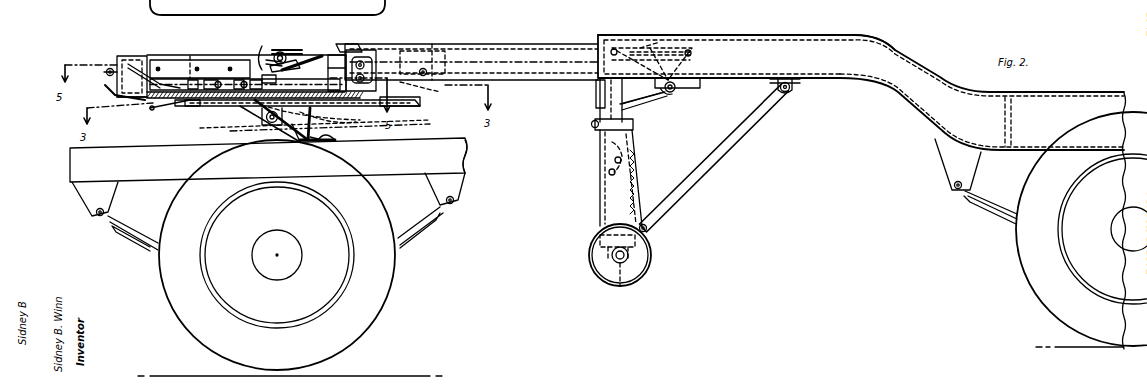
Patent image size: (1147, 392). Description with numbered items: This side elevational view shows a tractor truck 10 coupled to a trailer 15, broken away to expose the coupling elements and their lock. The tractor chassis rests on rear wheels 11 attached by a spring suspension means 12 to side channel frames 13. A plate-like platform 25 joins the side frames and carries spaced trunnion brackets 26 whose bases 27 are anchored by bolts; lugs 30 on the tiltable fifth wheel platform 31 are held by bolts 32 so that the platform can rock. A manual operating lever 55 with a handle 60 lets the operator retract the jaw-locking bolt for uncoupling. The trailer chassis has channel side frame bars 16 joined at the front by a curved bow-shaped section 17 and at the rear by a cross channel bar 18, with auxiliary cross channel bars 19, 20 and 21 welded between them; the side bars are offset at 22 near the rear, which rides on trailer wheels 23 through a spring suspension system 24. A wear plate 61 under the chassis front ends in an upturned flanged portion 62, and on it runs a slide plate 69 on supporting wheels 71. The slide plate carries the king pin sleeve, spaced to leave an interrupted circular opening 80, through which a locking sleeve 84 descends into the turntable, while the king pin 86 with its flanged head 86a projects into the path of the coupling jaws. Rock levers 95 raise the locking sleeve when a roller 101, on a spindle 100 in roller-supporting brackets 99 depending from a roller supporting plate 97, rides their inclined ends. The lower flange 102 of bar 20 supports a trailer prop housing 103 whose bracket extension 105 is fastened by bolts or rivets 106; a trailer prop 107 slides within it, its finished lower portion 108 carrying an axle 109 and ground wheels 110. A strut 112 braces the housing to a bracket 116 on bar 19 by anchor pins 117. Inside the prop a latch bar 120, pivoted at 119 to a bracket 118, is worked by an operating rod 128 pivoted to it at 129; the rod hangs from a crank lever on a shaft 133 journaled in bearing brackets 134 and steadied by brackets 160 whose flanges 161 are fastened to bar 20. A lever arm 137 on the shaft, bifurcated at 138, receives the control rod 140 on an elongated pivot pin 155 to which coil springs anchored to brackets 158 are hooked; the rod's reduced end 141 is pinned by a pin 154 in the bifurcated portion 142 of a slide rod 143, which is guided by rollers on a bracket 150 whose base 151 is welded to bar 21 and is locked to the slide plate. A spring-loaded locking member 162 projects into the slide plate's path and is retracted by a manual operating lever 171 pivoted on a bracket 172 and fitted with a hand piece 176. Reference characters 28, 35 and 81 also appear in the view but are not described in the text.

The tractor truck 10 is at (468, 163).
The rear wheels 11 is at (385, 291).
The spring suspension means 12 is at (419, 232).
The side channel frames 13 is at (428, 142).
The trailer 15 is at (876, 32).
The side frame bars 16 is at (734, 34).
The curved bow-shaped section 17 is at (117, 78).
The cross channel bar 18 is at (1012, 125).
The auxiliary cross channel bar 19 is at (798, 48).
The auxiliary cross channel bar 20 is at (600, 98).
The auxiliary cross channel bar 21 is at (360, 52).
The offset 22 is at (933, 72).
The trailer wheels 23 is at (1045, 280).
The spring suspension system 24 is at (992, 220).
The plate-like platform 25 is at (337, 135).
The trunnion brackets 26 is at (252, 128).
The bracket base 27 is at (247, 142).
The pivot 28 is at (318, 133).
The lugs 30 is at (262, 114).
The tiltable fifth wheel platform 31 is at (195, 107).
The bolts 32 is at (300, 144).
The plate 35 is at (410, 104).
The manual operating lever 55 is at (180, 108).
The handle 60 is at (152, 110).
The wear plate 61 is at (133, 104).
The upturned flanged portion 62 is at (108, 93).
The slide plate 69 is at (250, 48).
The supporting wheels 71 is at (232, 60).
The interrupted circular opening 80 is at (272, 70).
The plate 81 is at (177, 60).
The locking sleeve 84 is at (216, 106).
The king pin 86 is at (320, 114).
The flanged head 86a is at (336, 117).
The rock levers 95 is at (335, 55).
The roller supporting plate 97 is at (290, 52).
The roller-supporting brackets 99 is at (268, 56).
The spindle 100 is at (278, 50).
The roller 101 is at (312, 56).
The lower flange 102 is at (630, 116).
The trailer prop housing 103 is at (600, 194).
The bracket extension 105 is at (595, 125).
The bolts or rivets 106 is at (591, 120).
The trailer prop 107 is at (600, 244).
The finished lower portion 108 is at (622, 284).
The axle 109 is at (628, 258).
The ground wheels 110 is at (590, 266).
The strut 112 is at (725, 150).
The bracket 116 is at (796, 83).
The anchor pins 117 is at (790, 92).
The bracket 118 is at (606, 182).
The pivot 119 is at (608, 172).
The latch bar 120 is at (614, 160).
The operating rod 128 is at (624, 107).
The pivot 129 is at (640, 158).
The shaft 133 is at (676, 92).
The bearing brackets 134 is at (685, 90).
The lever arm 137 is at (695, 68).
The bifurcated portion 138 is at (410, 62).
The control rod 140 is at (522, 44).
The reduced end 141 is at (428, 68).
The bifurcated portion 142 is at (432, 92).
The slide rod 143 is at (348, 42).
The bracket 150 is at (385, 52).
The bracket base 151 is at (648, 46).
The pin 154 is at (433, 48).
The elongated pivot pin 155 is at (690, 52).
The bracket 158 is at (626, 48).
The brackets 160 is at (660, 48).
The flanges 161 is at (596, 90).
The locking member 162 is at (212, 60).
The manual operating lever 171 is at (132, 58).
The bracket 172 is at (190, 55).
The manual hand piece 176 is at (108, 68).